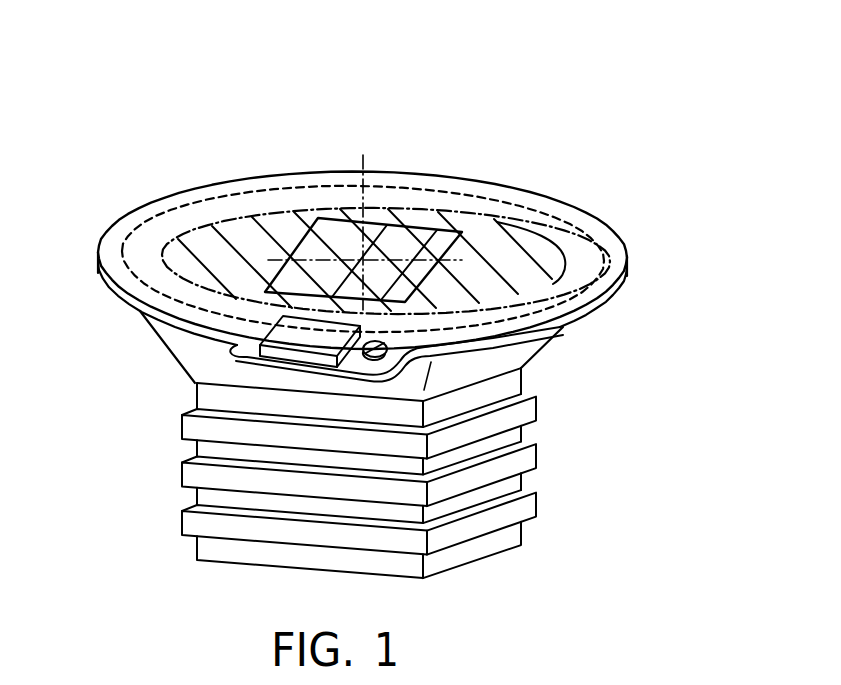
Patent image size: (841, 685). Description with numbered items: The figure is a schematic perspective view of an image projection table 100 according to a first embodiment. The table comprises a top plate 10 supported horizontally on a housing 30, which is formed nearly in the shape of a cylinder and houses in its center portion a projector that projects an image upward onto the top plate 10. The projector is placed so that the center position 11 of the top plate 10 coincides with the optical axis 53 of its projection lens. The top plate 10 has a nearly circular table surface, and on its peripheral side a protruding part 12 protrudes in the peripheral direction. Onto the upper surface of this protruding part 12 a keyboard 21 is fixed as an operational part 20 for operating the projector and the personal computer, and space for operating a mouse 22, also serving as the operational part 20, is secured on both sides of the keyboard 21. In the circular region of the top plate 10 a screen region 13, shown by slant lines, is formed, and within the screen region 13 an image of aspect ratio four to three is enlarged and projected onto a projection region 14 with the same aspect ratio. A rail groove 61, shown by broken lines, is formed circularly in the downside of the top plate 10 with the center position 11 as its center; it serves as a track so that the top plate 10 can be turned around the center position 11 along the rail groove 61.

The image projection table 100 is at (553, 87).
The top plate 10 is at (538, 196).
The center position 11 is at (372, 263).
The protruding part 12 is at (255, 342).
The screen region 13 is at (610, 253).
The projection region 14 is at (418, 217).
The operational part 20 is at (291, 456).
The keyboard 21 is at (300, 335).
The mouse 22 is at (363, 358).
The housing 30 is at (503, 387).
The optical axis 53 is at (364, 157).
The rail groove 61 is at (618, 290).